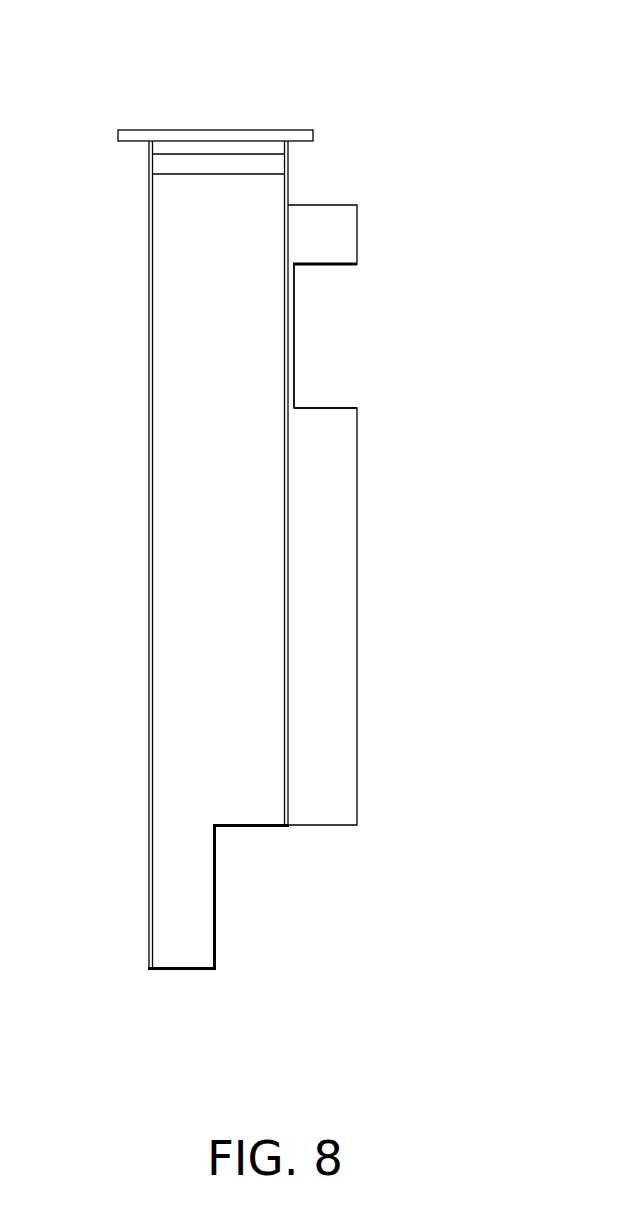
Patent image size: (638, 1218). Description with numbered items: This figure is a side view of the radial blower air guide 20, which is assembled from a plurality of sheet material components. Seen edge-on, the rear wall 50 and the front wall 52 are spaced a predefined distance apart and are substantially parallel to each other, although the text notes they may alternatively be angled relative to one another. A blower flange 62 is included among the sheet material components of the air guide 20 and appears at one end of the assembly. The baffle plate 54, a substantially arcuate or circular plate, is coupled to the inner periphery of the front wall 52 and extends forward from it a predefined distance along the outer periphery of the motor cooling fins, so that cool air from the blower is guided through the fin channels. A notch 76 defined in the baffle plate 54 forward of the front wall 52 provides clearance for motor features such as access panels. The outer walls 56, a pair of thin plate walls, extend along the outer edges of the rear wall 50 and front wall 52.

The air guide 20 is at (461, 63).
The rear wall 50 is at (149, 862).
The front wall 52 is at (288, 188).
The baffle plate 54 is at (357, 232).
The outer walls 56 is at (215, 550).
The blower flange 62 is at (132, 130).
The notches 76 is at (328, 396).